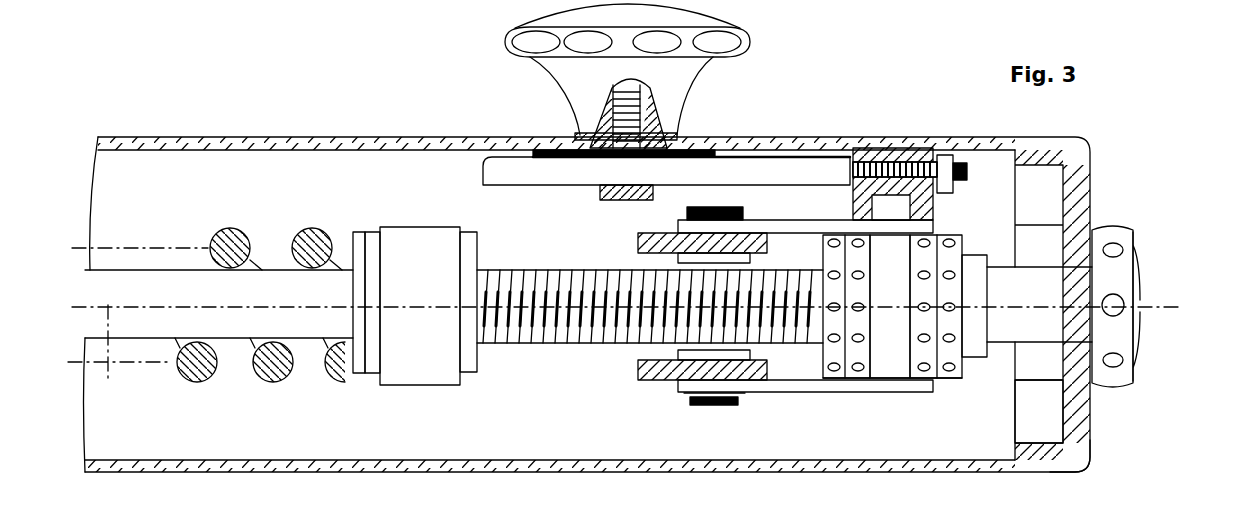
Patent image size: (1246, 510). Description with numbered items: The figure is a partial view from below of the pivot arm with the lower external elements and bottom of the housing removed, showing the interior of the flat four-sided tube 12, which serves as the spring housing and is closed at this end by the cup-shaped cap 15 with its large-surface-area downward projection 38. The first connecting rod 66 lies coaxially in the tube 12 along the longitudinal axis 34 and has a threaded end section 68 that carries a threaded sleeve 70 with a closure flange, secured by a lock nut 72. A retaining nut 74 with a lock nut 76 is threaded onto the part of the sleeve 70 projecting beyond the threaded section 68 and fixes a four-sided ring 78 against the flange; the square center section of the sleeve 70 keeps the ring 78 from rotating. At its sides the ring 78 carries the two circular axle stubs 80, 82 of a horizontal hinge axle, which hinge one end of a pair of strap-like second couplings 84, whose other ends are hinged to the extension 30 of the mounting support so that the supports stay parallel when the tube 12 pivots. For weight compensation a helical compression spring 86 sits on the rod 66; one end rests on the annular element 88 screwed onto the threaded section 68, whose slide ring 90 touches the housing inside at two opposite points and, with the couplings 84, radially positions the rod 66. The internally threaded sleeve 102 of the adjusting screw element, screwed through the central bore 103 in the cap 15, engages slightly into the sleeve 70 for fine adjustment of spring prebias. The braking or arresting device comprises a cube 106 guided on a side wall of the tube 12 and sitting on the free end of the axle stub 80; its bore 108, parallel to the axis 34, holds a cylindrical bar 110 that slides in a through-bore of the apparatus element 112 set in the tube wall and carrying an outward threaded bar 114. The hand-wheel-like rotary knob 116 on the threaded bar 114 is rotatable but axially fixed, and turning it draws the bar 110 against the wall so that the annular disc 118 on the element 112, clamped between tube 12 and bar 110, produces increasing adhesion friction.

The four-sided tube 12 is at (303, 137).
The cap 15 is at (1094, 450).
The extension 30 is at (640, 244).
The longitudinal axis 34 is at (219, 337).
The downward projection 38 is at (1045, 192).
The first connecting rod 66 is at (150, 344).
The threaded end section 68 is at (535, 350).
The threaded sleeve 70 is at (974, 358).
The lock nut 72 is at (822, 385).
The retaining nut 74 is at (935, 380).
The lock nut 76 is at (948, 258).
The four-sided ring 78 is at (847, 392).
The axle stub 80 is at (918, 210).
The axle stub 82 is at (895, 406).
The second couplings 84 is at (790, 225).
The helical compression spring 86 is at (306, 228).
The annular element 88 is at (371, 230).
The slide ring 90 is at (430, 372).
The sleeve 102 is at (1082, 292).
The central bore 103 is at (1060, 350).
The cube 106 is at (940, 150).
The bore 108 is at (898, 146).
The cylindrical bar 110 is at (517, 186).
The apparatus element 112 is at (604, 203).
The threaded bar 114 is at (668, 118).
The rotary knob 116 is at (680, 17).
The annular disc 118 is at (532, 138).